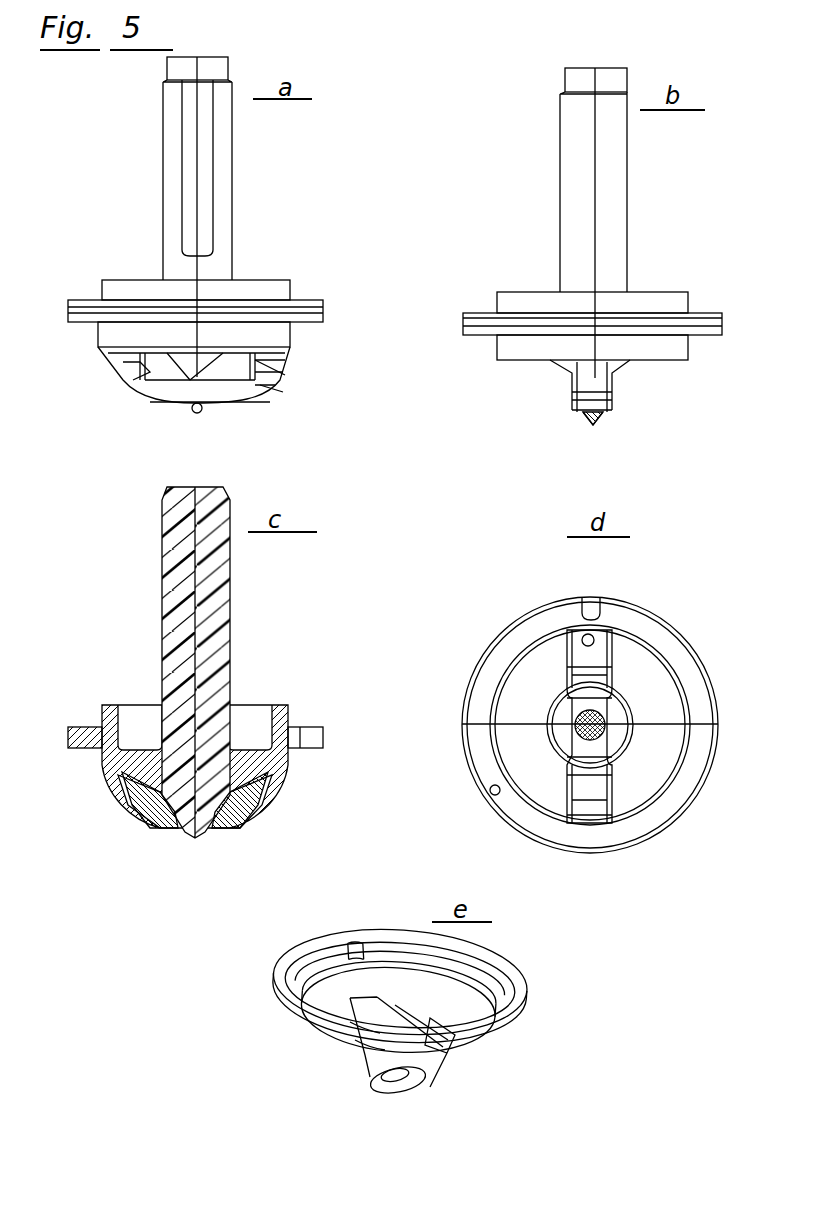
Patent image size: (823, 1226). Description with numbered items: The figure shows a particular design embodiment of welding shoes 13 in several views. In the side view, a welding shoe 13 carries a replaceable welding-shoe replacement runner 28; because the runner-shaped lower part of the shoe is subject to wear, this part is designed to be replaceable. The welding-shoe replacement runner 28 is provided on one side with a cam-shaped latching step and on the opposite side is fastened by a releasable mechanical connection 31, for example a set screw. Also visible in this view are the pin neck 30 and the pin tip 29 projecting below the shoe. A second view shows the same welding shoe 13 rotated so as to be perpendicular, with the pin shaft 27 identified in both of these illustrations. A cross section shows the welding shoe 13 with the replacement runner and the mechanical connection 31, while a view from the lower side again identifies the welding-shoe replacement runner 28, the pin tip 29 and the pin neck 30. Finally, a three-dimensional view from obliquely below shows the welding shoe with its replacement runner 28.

The welding shoe 13 is at (497, 342).
The pin shaft 27 is at (232, 177).
The welding-shoe replacement runner 28 is at (263, 383).
The pin tip 29 is at (202, 411).
The pin neck 30 is at (223, 353).
The releasable mechanical connection 31 is at (263, 382).